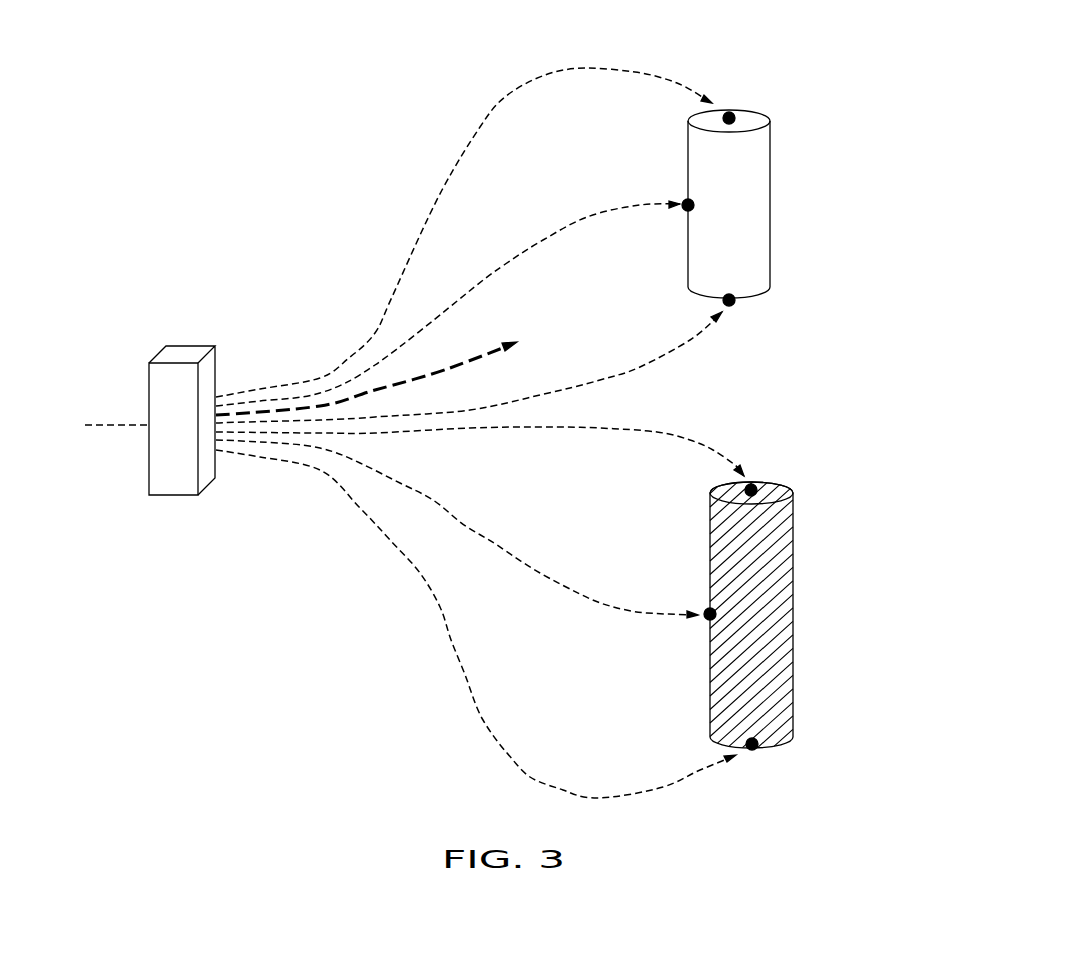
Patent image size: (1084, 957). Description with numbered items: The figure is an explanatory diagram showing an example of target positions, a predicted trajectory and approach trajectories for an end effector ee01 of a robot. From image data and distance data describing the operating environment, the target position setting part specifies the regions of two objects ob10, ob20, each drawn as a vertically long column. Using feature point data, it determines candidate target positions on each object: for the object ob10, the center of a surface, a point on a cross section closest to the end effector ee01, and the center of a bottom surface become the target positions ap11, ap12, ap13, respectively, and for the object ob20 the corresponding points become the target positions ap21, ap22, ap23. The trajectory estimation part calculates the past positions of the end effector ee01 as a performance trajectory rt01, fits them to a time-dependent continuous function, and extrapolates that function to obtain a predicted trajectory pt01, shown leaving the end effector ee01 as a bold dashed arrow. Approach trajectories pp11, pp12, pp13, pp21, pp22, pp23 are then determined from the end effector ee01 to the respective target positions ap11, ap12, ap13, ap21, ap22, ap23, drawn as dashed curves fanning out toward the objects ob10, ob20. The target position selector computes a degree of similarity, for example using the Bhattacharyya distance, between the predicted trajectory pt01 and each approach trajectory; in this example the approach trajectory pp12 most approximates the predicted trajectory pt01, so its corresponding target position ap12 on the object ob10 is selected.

The end effector ee01 is at (180, 497).
The performance trajectory rt01 is at (100, 420).
The predicted trajectory pt01 is at (484, 338).
The object ob10 is at (771, 205).
The object ob20 is at (795, 607).
The approach trajectory pp11 is at (583, 68).
The approach trajectory pp12 is at (580, 218).
The approach trajectory pp13 is at (640, 366).
The approach trajectory pp21 is at (664, 437).
The approach trajectory pp22 is at (530, 527).
The approach trajectory pp23 is at (597, 797).
The target position ap11 is at (737, 110).
The target position ap12 is at (681, 212).
The target position ap13 is at (736, 306).
The target position ap21 is at (755, 485).
The target position ap22 is at (706, 609).
The target position ap23 is at (757, 750).